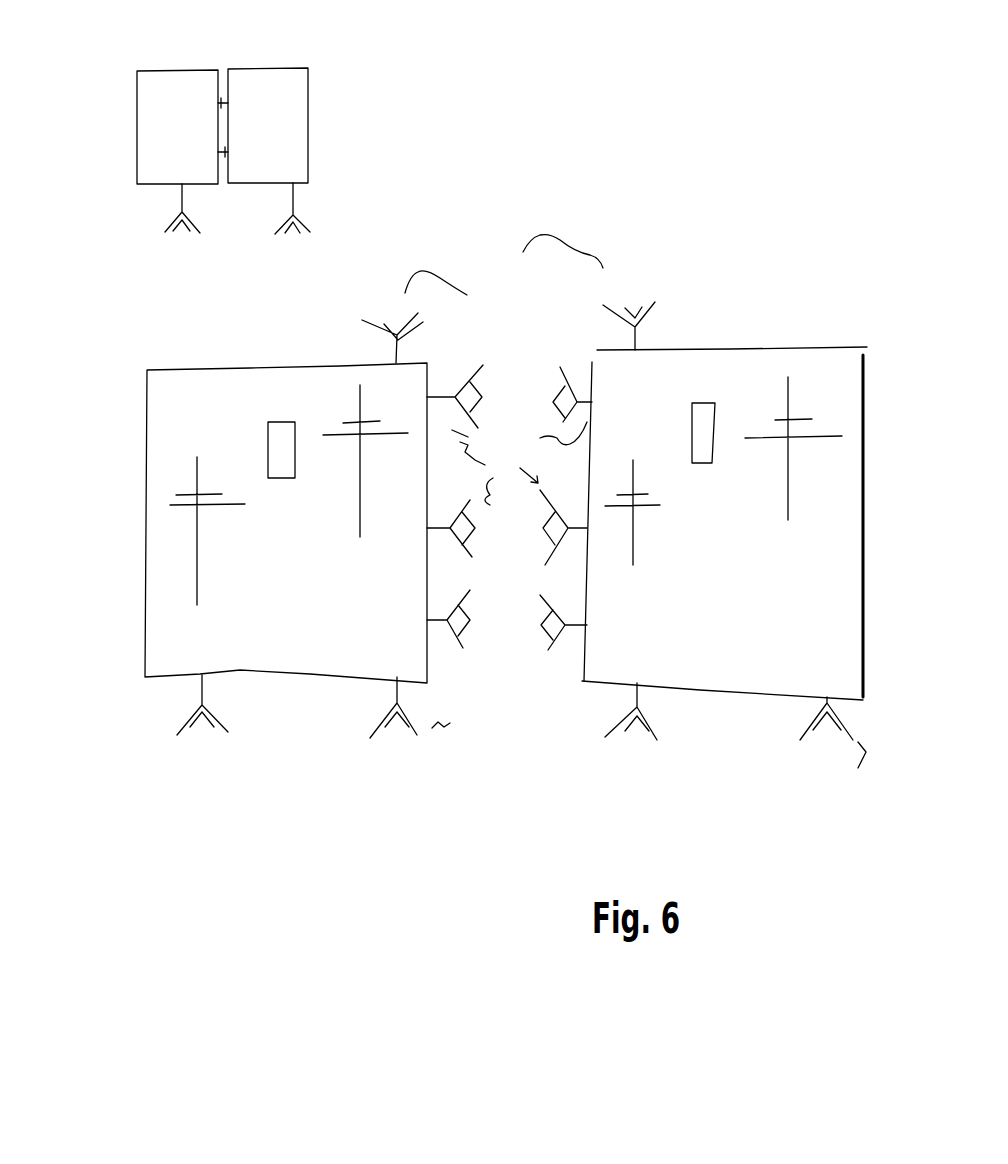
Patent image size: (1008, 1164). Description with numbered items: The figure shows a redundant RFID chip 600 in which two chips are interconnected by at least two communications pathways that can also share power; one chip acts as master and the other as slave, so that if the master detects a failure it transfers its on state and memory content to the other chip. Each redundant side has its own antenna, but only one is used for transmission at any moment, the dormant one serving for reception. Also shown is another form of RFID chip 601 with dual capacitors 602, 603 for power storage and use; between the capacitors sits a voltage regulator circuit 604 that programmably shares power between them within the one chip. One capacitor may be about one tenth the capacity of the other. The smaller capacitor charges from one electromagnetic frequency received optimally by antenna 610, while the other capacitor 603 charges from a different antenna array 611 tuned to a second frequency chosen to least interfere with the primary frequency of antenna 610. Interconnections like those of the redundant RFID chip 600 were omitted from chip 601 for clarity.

The redundant RFID chip 600 is at (182, 55).
The RFID chip 601 is at (145, 568).
The capacitor 602 is at (184, 600).
The capacitor 603 is at (322, 837).
The voltage regulator circuit 604 is at (282, 420).
The antenna 610 is at (192, 250).
The antenna array 611 is at (637, 513).